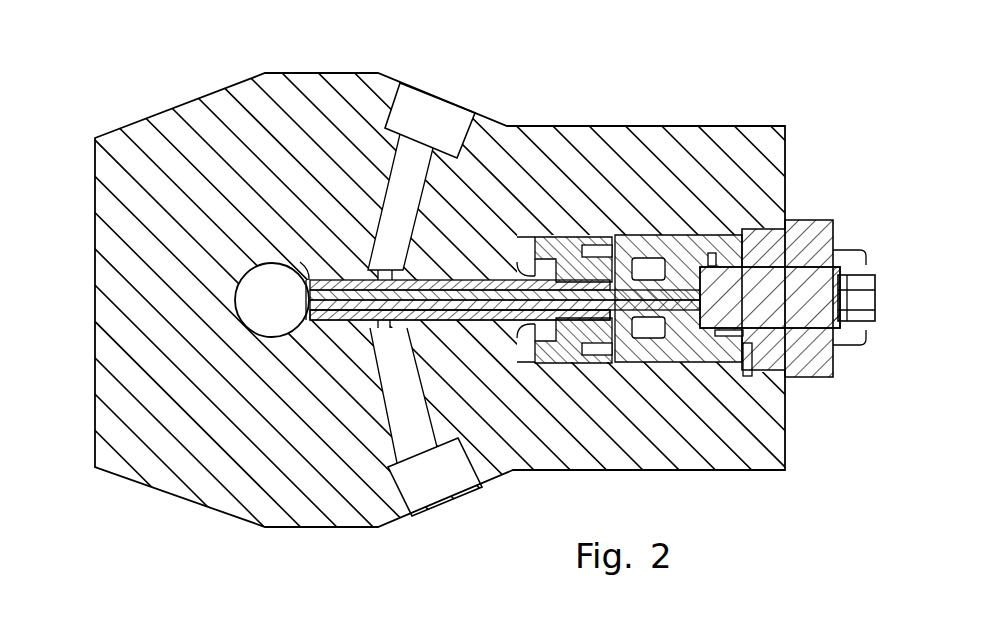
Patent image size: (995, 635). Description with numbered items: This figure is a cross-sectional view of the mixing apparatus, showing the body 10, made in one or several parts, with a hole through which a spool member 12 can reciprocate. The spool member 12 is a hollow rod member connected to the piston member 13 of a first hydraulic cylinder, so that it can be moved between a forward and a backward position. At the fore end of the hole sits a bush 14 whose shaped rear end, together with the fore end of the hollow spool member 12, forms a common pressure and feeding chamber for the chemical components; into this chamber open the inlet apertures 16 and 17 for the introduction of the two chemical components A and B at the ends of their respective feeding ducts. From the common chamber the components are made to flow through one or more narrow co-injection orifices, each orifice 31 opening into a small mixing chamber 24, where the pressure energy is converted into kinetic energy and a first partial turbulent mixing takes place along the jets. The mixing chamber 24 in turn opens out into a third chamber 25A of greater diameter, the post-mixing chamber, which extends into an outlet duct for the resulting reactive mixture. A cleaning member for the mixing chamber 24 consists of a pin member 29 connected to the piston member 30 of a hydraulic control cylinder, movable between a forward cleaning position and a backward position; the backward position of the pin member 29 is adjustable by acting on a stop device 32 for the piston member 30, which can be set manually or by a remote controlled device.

The body 10 is at (170, 137).
The spool member 12 is at (452, 278).
The piston member 13 is at (553, 238).
The bush 14 is at (325, 320).
The inlet aperture 16 is at (413, 517).
The inlet aperture 17 is at (368, 270).
The mixing chamber 24 is at (300, 262).
The post-mixing chamber 25A is at (267, 302).
The pin member 29 is at (478, 330).
The piston member 30 is at (705, 362).
The orifice 31 is at (347, 323).
The stop device 32 is at (802, 293).